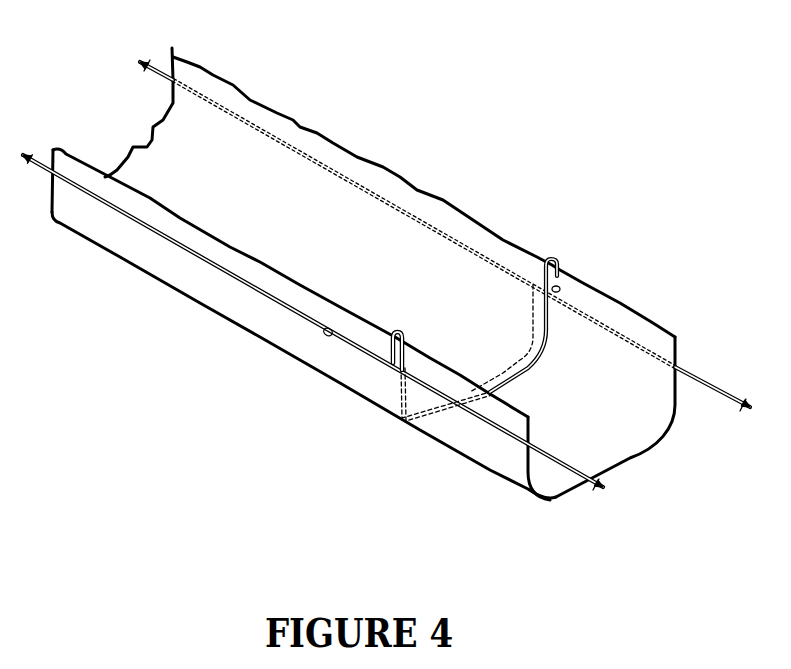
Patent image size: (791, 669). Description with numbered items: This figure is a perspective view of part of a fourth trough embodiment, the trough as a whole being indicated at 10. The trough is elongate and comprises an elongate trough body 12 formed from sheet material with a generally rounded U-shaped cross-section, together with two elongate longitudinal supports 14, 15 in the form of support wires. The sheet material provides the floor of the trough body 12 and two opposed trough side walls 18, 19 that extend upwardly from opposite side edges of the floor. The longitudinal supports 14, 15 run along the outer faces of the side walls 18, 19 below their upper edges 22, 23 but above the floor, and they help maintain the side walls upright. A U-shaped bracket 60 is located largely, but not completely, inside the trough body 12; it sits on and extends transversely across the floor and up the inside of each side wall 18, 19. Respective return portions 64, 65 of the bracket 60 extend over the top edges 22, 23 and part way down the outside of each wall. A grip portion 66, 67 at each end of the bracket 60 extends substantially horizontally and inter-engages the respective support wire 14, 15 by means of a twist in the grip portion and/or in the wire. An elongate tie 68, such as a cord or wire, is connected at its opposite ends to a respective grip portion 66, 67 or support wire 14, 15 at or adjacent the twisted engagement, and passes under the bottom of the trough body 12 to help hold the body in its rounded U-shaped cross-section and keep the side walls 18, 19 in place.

The gutter assembly 10 is at (369, 280).
The trough body 12 is at (624, 455).
The longitudinal support 14 is at (575, 477).
The longitudinal support 15 is at (445, 235).
The trough side wall 18 is at (217, 297).
The trough side wall 19 is at (297, 133).
The upper edge 22 is at (77, 163).
The upper edge 23 is at (251, 100).
The U-shaped bracket 60 is at (565, 273).
The return portion 64 is at (390, 362).
The return portion 65 is at (558, 287).
The grip portion 66 is at (327, 333).
The grip portion 67 is at (592, 322).
The elongate tie 68 is at (533, 310).